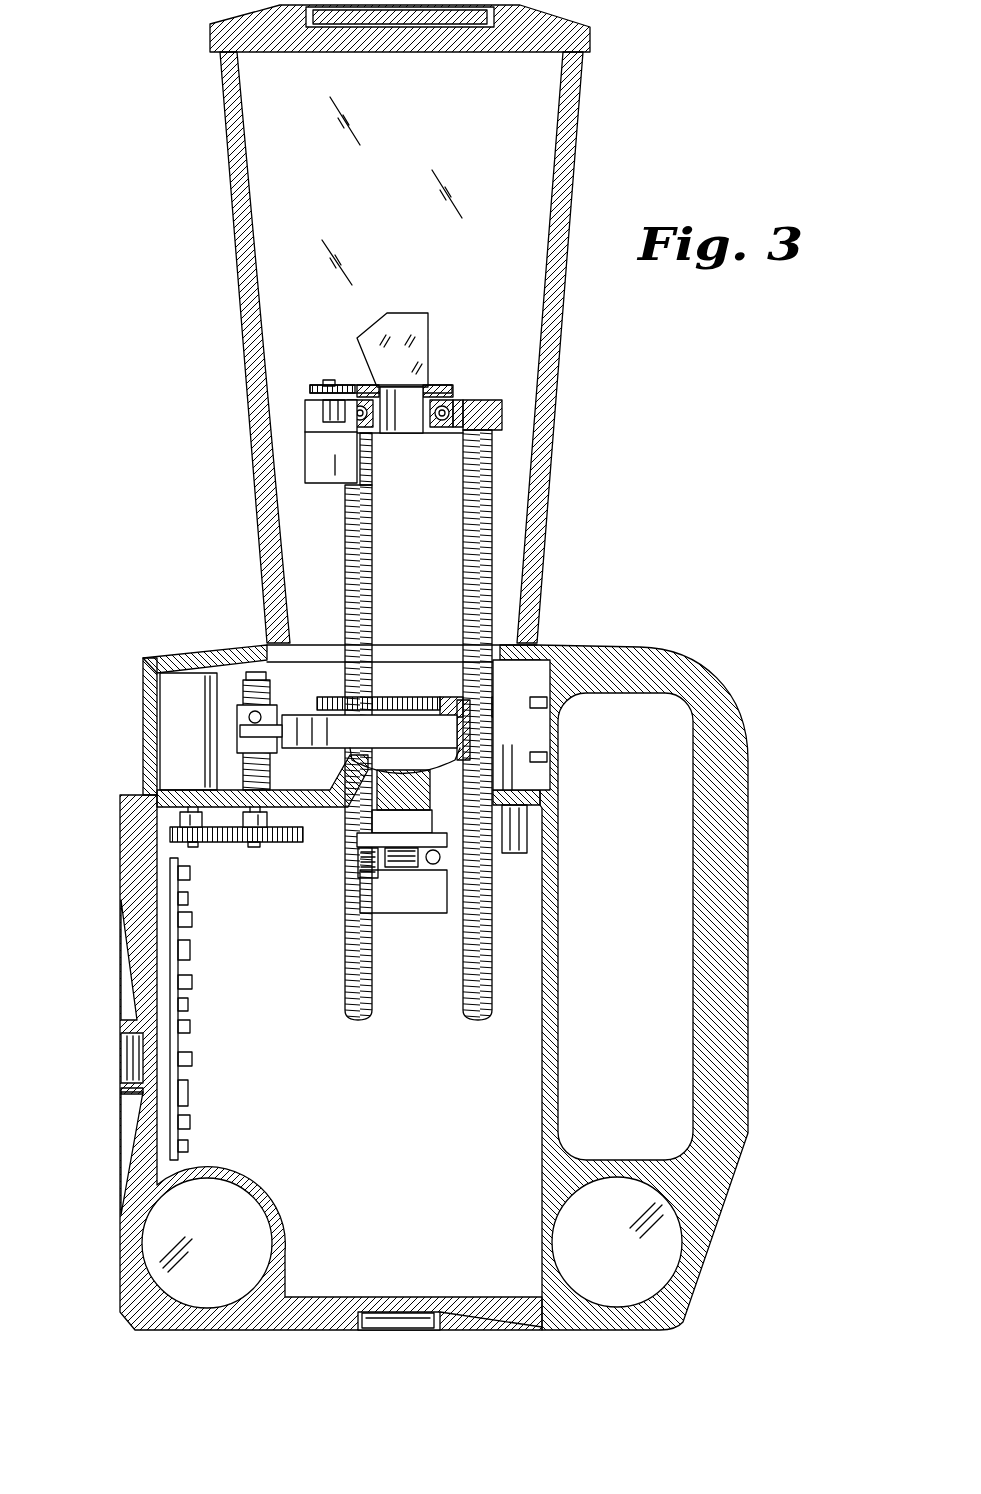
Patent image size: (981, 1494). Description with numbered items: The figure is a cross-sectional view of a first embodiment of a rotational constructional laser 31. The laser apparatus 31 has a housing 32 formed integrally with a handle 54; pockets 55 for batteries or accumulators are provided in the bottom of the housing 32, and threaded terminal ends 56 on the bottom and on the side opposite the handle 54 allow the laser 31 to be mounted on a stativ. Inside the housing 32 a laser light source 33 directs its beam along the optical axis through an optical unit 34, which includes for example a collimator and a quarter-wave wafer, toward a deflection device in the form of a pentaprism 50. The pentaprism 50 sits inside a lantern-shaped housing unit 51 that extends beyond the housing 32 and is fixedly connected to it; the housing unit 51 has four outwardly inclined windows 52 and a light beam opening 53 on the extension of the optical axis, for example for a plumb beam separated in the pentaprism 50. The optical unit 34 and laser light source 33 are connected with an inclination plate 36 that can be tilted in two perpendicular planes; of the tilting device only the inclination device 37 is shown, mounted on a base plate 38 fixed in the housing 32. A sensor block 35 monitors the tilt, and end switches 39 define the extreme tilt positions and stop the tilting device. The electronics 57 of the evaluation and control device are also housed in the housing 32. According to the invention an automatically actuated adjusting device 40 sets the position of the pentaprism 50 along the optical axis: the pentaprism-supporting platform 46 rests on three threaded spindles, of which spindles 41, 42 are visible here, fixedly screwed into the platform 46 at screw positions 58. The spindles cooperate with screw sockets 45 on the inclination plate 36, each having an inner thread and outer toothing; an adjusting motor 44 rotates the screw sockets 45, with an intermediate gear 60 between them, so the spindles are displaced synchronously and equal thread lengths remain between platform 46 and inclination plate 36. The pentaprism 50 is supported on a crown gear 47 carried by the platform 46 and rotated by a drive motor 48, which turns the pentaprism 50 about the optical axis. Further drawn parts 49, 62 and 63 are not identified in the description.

The rotational constructional laser 31 is at (690, 494).
The housing 32 is at (117, 848).
The laser light source 33 is at (432, 902).
The optical unit 34 is at (392, 840).
The sensor block 35 is at (357, 874).
The inclination plate 36 is at (330, 735).
The inclination device 37 is at (236, 692).
The base plate 38 is at (320, 822).
The end switches 39 is at (545, 704).
The adjusting device 40 is at (497, 508).
The threaded spindle 41 is at (478, 1008).
The threaded spindle 42 is at (355, 1008).
The adjusting motor 44 is at (507, 850).
The screw sockets 45 is at (518, 690).
The pentaprism-supporting platform 46 is at (458, 395).
The crown gear 47 is at (445, 385).
The drive motor 48 is at (322, 466).
The toothed plate 49 is at (315, 384).
The pentaprism 50 is at (396, 334).
The lantern-shaped housing unit 51 is at (598, 38).
The windows 52 is at (232, 172).
The light beam opening 53 is at (437, 24).
The handle 54 is at (712, 937).
The pockets 55 is at (224, 1259).
The threaded terminal ends 56 is at (128, 1080).
The electronics 57 is at (192, 981).
The screw positions 58 is at (476, 406).
The intermediate gear 60 is at (393, 696).
The pinion 62 is at (430, 698).
The shaft 63 is at (405, 416).